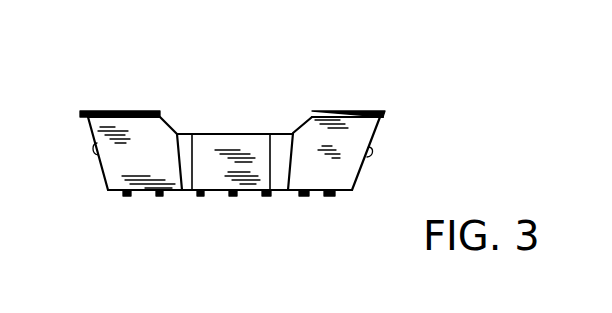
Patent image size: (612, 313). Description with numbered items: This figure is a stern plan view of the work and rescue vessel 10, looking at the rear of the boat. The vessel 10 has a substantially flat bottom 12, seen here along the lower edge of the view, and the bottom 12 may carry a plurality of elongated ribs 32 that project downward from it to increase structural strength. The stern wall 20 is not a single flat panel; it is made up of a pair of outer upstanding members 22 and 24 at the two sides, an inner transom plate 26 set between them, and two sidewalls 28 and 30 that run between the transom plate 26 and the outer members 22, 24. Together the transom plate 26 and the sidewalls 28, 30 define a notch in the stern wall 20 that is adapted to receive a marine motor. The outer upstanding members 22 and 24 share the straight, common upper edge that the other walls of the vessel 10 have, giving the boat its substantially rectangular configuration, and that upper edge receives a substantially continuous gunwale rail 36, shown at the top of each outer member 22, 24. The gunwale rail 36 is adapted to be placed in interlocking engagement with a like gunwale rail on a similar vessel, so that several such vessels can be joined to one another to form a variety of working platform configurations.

The vessel 10 is at (258, 92).
The bottom 12 is at (317, 195).
The stern wall 20 is at (377, 172).
The outer upstanding member 22 is at (144, 128).
The outer upstanding member 24 is at (340, 121).
The inner transom plate 26 is at (236, 136).
The sidewall 28 is at (187, 175).
The sidewall 30 is at (282, 171).
The elongated ribs 32 is at (158, 197).
The gunwale rail 36 is at (98, 109).